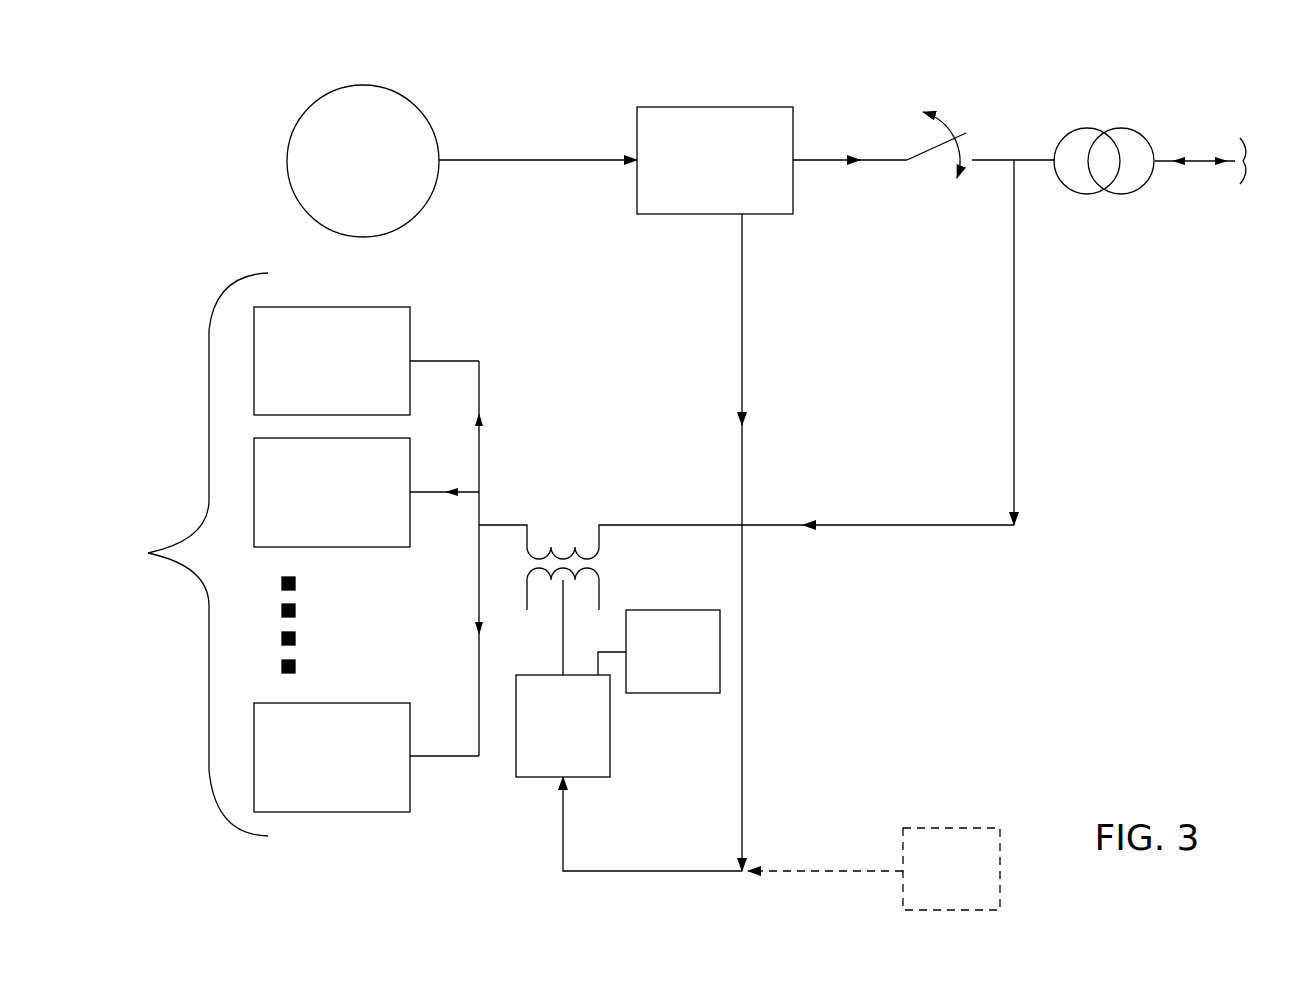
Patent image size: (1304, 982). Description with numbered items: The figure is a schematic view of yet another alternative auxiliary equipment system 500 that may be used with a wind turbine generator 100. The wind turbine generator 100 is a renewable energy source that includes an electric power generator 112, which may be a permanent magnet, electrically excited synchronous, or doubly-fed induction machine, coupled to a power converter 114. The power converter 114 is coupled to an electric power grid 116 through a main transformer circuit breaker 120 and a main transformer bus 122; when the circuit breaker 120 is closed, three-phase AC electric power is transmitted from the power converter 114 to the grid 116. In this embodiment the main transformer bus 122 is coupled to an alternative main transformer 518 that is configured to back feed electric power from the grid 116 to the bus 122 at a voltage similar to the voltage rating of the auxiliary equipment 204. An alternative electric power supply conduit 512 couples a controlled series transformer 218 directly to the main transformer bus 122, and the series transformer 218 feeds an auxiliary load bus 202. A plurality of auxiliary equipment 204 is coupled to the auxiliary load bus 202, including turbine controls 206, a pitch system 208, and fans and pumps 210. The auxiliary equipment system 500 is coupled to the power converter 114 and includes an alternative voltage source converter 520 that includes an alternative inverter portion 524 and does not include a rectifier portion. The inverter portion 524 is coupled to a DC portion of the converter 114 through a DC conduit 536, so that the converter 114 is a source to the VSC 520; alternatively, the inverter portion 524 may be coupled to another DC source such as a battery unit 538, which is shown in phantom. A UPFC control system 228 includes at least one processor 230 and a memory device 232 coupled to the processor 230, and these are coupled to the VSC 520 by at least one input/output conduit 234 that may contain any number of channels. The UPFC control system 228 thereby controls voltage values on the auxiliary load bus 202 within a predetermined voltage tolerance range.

The wind turbine generator 100 is at (313, 66).
The electric power generator 112 is at (405, 95).
The power converter 114 is at (683, 107).
The main transformer circuit breaker 120 is at (955, 113).
The main transformer bus 122 is at (998, 160).
The electric power grid 116 is at (1239, 220).
The alternative main transformer 518 is at (1123, 128).
The alternative electric power supply conduit 512 is at (1014, 380).
The auxiliary equipment system 500 is at (437, 298).
The auxiliary equipment 204 is at (209, 460).
The turbine controls 206 is at (314, 383).
The pitch system 208 is at (314, 505).
The fans and pumps 210 is at (314, 763).
The auxiliary load bus 202 is at (479, 580).
The controlled series transformer 218 is at (573, 542).
The UPFC control system 228 is at (673, 610).
The processor 230 is at (638, 641).
The memory device 232 is at (665, 678).
The input/output conduit 234 is at (598, 656).
The inverter portion 524 is at (610, 755).
The alternative voltage source converter 520 is at (536, 782).
The DC conduit 536 is at (742, 735).
The battery unit 538 is at (933, 881).